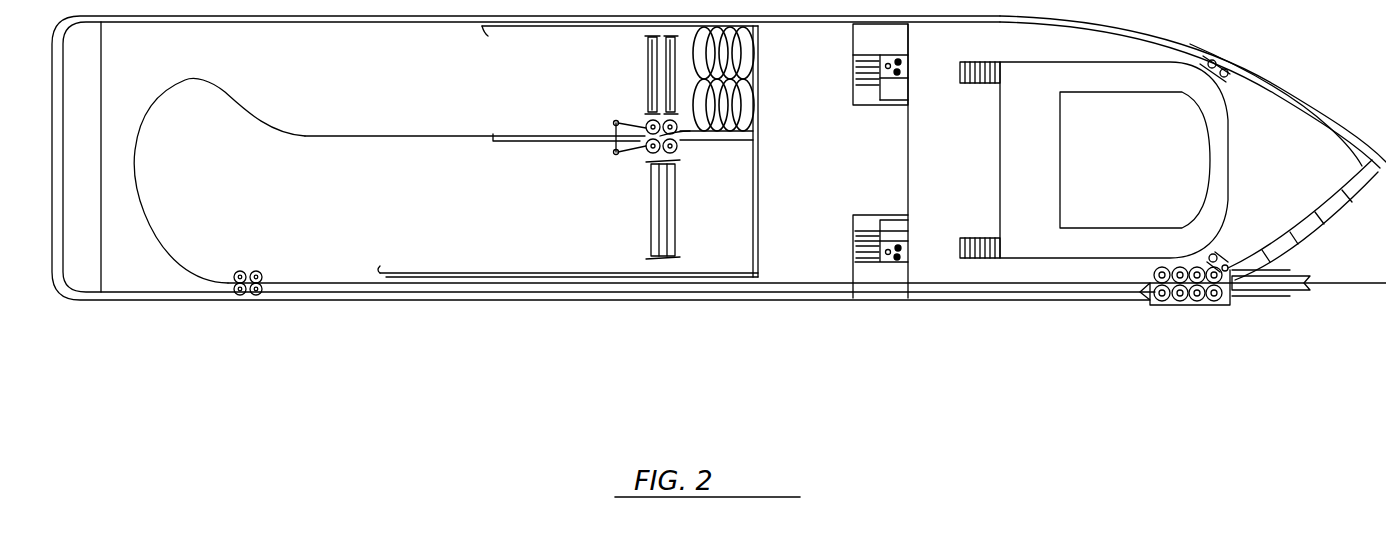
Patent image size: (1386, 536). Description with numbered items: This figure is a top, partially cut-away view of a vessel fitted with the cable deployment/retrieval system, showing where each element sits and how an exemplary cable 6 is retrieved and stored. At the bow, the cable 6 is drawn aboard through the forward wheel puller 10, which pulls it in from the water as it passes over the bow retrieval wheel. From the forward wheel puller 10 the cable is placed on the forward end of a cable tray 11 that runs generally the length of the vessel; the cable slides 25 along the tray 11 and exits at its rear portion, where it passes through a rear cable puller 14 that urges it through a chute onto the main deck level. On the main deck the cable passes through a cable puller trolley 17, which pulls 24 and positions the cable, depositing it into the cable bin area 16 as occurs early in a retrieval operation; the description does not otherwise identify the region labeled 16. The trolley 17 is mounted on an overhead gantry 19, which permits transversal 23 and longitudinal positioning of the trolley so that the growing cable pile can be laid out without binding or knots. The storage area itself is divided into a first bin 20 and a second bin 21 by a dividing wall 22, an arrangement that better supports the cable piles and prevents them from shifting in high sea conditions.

The cable 6 is at (1358, 289).
The forward wheel puller 10 is at (1195, 306).
The cable tray 11 is at (830, 290).
The rear cable puller 14 is at (252, 301).
The storage area / belt loop 16 is at (455, 203).
The cable puller trolley 17 is at (643, 163).
The overhead gantry 19 is at (650, 212).
The first bin 20 is at (522, 94).
The second bin 21 is at (731, 224).
The dividing wall 22 is at (520, 143).
The transversal positioning 23 is at (632, 45).
The pulling of cable by trolley 24 is at (403, 146).
The cable sliding 25 is at (640, 291).